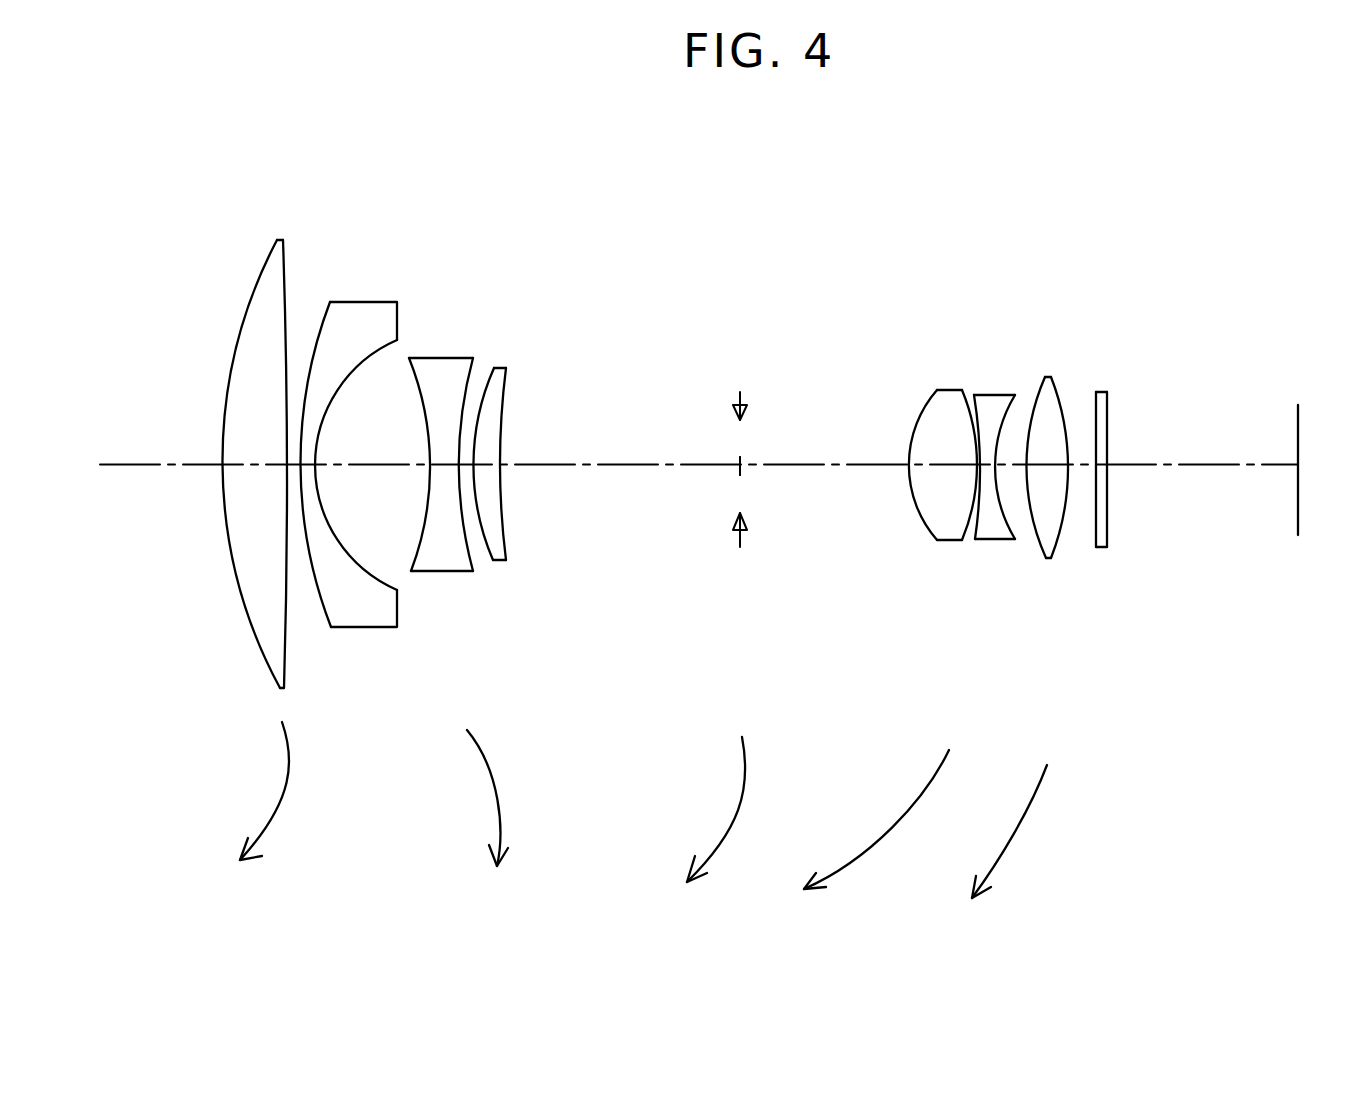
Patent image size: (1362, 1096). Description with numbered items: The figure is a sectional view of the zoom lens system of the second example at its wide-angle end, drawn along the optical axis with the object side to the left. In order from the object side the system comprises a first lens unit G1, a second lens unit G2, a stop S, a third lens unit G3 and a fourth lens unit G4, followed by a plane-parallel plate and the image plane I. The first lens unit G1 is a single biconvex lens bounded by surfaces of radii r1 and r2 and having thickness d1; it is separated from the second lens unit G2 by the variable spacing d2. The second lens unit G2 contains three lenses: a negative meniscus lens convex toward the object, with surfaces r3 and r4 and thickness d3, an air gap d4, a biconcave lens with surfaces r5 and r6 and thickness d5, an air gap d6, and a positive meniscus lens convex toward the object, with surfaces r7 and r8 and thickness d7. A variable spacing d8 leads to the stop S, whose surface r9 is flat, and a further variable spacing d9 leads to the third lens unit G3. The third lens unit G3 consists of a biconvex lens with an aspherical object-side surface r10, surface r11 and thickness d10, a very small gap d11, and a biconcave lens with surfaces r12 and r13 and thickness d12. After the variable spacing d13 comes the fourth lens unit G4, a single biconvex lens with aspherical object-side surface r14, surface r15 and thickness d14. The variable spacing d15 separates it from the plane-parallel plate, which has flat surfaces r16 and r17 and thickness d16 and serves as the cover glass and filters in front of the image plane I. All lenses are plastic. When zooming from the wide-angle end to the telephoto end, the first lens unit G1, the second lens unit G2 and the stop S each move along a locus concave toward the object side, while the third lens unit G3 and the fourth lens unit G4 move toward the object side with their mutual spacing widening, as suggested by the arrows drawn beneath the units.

The first lens unit G1 is at (305, 173).
The second lens unit G2 is at (517, 173).
The third lens unit G3 is at (1008, 173).
The fourth lens unit G4 is at (1068, 173).
The stop S is at (760, 173).
The image plane I is at (1300, 438).
The radius of curvature of lens surface r1 is at (255, 283).
The radius of curvature of lens surface r2 is at (283, 280).
The radius of curvature of lens surface r3 is at (318, 328).
The radius of curvature of lens surface r4 is at (376, 357).
The radius of curvature of lens surface r5 is at (415, 385).
The radius of curvature of lens surface r6 is at (470, 378).
The radius of curvature of lens surface r7 is at (490, 387).
The radius of curvature of lens surface r8 is at (507, 393).
The radius of curvature of stop surface r9 is at (743, 438).
The radius of curvature of lens surface r10 is at (922, 413).
The radius of curvature of lens surface r11 is at (963, 407).
The radius of curvature of lens surface r12 is at (982, 407).
The radius of curvature of lens surface r13 is at (998, 410).
The radius of curvature of lens surface r14 is at (1060, 398).
The radius of curvature of lens surface r15 is at (1090, 412).
The radius of curvature of plate surface r16 is at (1110, 400).
The radius of curvature of plate surface r17 is at (1112, 412).
The spacing between adjacent lens surfaces d1 is at (259, 489).
The spacing between adjacent lens surfaces d2 is at (306, 592).
The spacing between adjacent lens surfaces d3 is at (333, 565).
The spacing between adjacent lens surfaces d4 is at (379, 489).
The spacing between adjacent lens surfaces d5 is at (447, 525).
The spacing between adjacent lens surfaces d6 is at (476, 527).
The spacing between adjacent lens surfaces d7 is at (500, 532).
The spacing between adjacent lens surfaces d8 is at (612, 465).
The spacing between adjacent lens surfaces d9 is at (834, 465).
The spacing between adjacent lens surfaces d10 is at (935, 512).
The spacing between adjacent lens surfaces d11 is at (975, 492).
The spacing between adjacent lens surfaces d12 is at (985, 505).
The spacing between adjacent lens surfaces d13 is at (1024, 500).
The spacing between adjacent lens surfaces d14 is at (1058, 515).
The spacing between adjacent lens surfaces d15 is at (1083, 525).
The spacing between adjacent lens surfaces d16 is at (1110, 492).